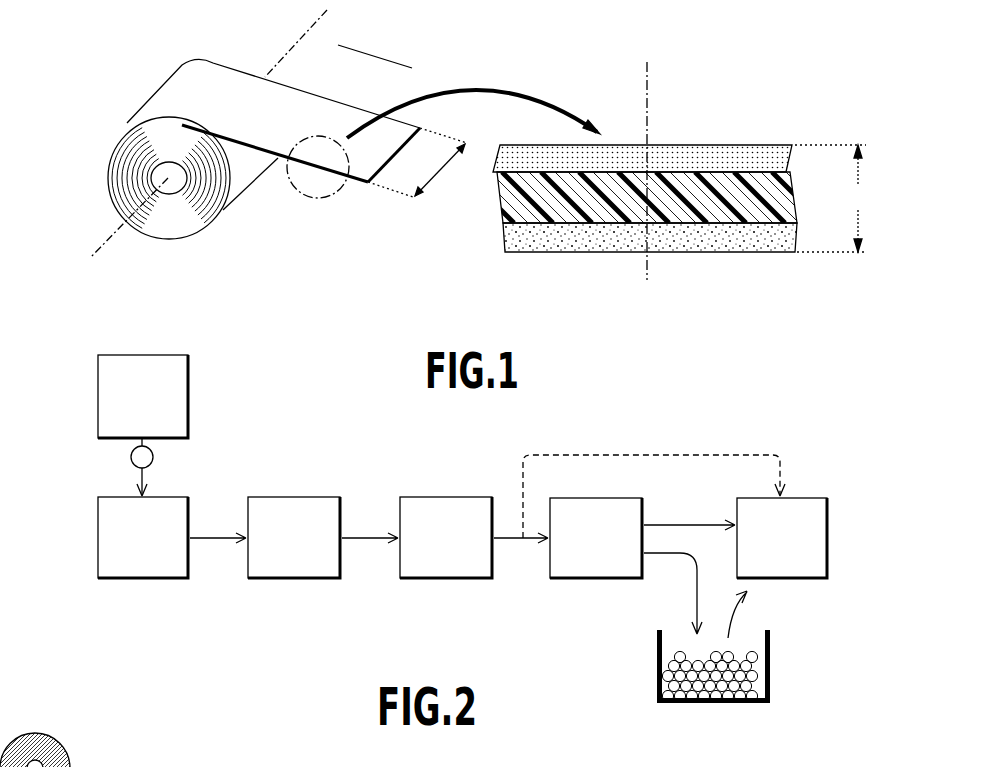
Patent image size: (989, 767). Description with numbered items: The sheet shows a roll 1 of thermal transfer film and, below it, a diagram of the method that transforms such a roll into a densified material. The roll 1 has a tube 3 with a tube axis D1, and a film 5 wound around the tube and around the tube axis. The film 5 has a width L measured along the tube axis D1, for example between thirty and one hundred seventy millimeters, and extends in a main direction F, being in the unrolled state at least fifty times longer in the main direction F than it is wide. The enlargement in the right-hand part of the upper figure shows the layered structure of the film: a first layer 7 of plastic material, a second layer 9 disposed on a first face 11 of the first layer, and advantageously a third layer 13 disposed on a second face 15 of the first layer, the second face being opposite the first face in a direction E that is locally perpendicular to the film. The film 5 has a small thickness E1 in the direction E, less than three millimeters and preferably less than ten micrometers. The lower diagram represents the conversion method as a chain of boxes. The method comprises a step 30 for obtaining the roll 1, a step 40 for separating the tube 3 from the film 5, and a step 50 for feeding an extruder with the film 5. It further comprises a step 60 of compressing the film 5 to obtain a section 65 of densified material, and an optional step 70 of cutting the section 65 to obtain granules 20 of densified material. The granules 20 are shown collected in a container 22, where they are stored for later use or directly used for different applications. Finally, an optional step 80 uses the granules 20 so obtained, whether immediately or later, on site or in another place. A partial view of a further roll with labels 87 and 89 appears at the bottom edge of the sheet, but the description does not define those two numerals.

In FIG. 1, the roll 1 is at (120, 64).
In FIG. 2, the roll 1 is at (154, 457).
In FIG. 1, the tube 3 is at (150, 173).
In FIG. 2, the tube 3 is at (40, 760).
In FIG. 1, the film 5 is at (242, 87).
In FIG. 2, the film 5 is at (113, 759).
In FIG. 1, the first layer 7 is at (780, 205).
In FIG. 1, the second layer 9 is at (768, 150).
In FIG. 1, the first face 11 is at (687, 172).
In FIG. 1, the third layer 13 is at (678, 238).
In FIG. 1, the second face 15 is at (732, 225).
In FIG. 1, the tube axis D1 is at (102, 248).
In FIG. 1, the direction E is at (649, 68).
In FIG. 1, the thickness E1 is at (833, 198).
In FIG. 1, the main direction F is at (375, 55).
In FIG. 1, the width L is at (417, 162).
In FIG. 2, the granules of densified material 20 is at (702, 704).
In FIG. 2, the container 22 is at (771, 665).
In FIG. 2, the step for obtaining the roll 30 is at (190, 393).
In FIG. 2, the step for separating the tube from the film 40 is at (142, 580).
In FIG. 2, the step for feeding an extruder 50 is at (294, 580).
In FIG. 2, the step of compressing the film 60 is at (442, 580).
In FIG. 2, the section of densified material 65 is at (503, 537).
In FIG. 2, the step of cutting the section 70 is at (580, 580).
In FIG. 2, the step of using the granules 80 is at (800, 580).
In FIG. 2, the component 87 is at (244, 759).
In FIG. 2, the component 89 is at (195, 766).